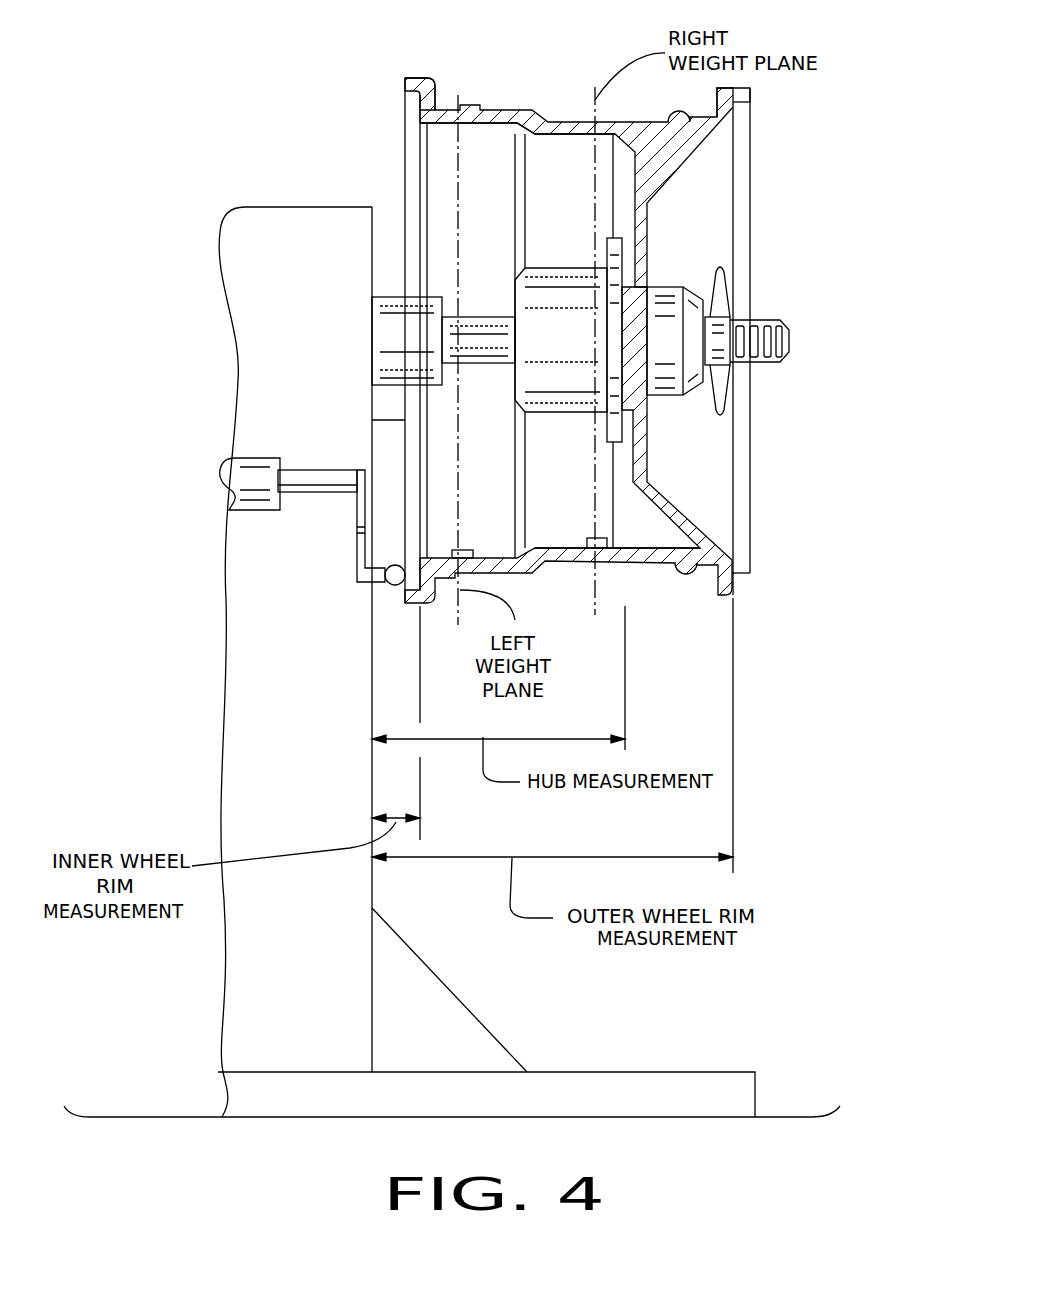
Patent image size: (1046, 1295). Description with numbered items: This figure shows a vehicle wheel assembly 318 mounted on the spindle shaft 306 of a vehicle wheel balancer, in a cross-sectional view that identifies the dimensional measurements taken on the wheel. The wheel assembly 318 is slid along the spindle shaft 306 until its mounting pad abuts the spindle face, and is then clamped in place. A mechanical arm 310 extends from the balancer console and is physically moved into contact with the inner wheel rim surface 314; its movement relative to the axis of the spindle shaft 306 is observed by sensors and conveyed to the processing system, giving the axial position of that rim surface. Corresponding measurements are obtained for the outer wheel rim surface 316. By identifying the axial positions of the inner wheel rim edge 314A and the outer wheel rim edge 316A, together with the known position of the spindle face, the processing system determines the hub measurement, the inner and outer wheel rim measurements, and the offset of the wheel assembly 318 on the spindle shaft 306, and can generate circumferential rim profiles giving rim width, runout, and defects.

The vehicle wheel assembly 318 is at (513, 104).
The inner wheel rim edge 314A is at (422, 117).
The inner wheel rim surface 314 is at (500, 124).
The outer wheel rim edge 316A is at (750, 108).
The outer wheel rim surface 316 is at (690, 548).
The spindle shaft 306 is at (802, 338).
The mechanical arm 310 is at (357, 555).